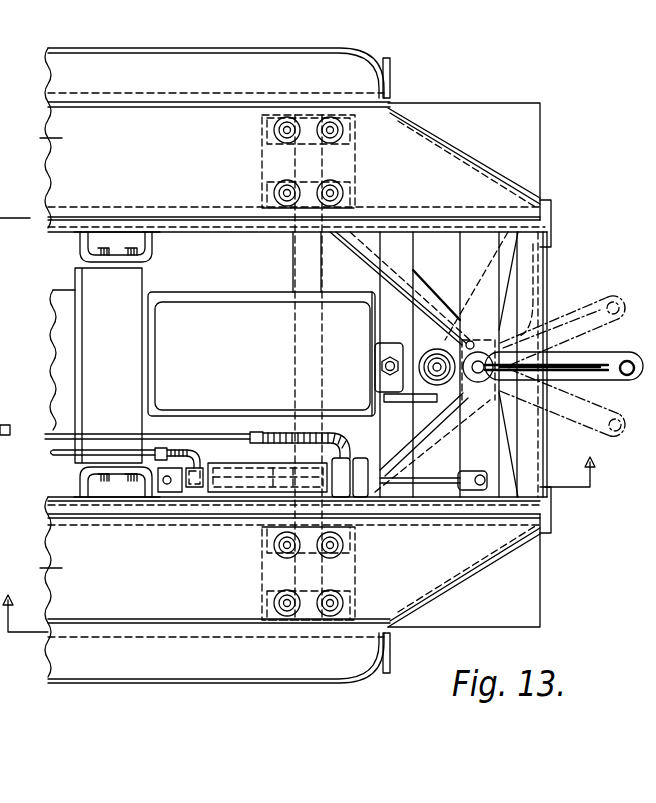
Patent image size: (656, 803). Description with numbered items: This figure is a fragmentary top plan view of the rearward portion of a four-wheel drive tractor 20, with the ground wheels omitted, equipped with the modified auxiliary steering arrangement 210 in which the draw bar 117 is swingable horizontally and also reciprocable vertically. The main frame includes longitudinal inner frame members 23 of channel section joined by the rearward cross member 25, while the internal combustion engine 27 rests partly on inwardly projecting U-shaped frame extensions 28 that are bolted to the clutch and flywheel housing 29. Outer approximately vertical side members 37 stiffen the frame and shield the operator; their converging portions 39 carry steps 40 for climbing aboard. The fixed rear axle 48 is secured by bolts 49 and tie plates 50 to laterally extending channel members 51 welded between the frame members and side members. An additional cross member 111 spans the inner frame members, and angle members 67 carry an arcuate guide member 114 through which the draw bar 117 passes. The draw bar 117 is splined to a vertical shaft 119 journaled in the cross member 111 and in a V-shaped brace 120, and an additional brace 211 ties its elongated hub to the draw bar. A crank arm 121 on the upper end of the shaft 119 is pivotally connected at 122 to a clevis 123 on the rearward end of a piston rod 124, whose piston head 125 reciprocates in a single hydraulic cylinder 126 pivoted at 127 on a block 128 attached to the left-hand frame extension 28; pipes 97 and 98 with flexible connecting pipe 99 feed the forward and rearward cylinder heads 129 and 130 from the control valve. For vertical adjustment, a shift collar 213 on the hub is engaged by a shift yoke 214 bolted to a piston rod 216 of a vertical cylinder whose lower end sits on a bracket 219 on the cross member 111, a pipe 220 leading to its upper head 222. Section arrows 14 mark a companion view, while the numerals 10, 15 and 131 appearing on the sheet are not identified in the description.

The vehicle frame 10 is at (15, 213).
The section line 14 is at (305, 536).
The frame rail 15 is at (42, 352).
The tractor 20 is at (559, 179).
The longitudinal inner frame members 23 is at (193, 237).
The rearward cross member 25 is at (534, 267).
The internal combustion engine 27 is at (244, 301).
The frame extensions 28 is at (151, 256).
The clutch and flywheel housing 29 is at (93, 347).
The side members 37 is at (195, 65).
The converging portions 39 is at (465, 156).
The steps 40 is at (529, 129).
The rear axle 48 is at (300, 255).
The bolts 49 is at (345, 133).
The tie plates 50 is at (314, 187).
The channel members 51 is at (355, 161).
The angle members 67 is at (556, 225).
The pipe 97 is at (112, 437).
The pipe 98 is at (50, 455).
The flexible connecting pipe 99 is at (281, 435).
The cross member 111 is at (478, 260).
The arcuate guide member 114 is at (388, 280).
The draw bar 117 is at (618, 352).
The vertical shaft 119 is at (468, 351).
The V-shaped brace 120 is at (574, 296).
The crank arm 121 is at (468, 463).
The pivotal connection 122 is at (482, 492).
The clevis 123 is at (467, 492).
The piston rod 124 is at (428, 492).
The piston head 125 is at (261, 460).
The hydraulic cylinder 126 is at (230, 486).
The pivotal mounting 127 is at (166, 494).
The block 128 is at (176, 495).
The forward cylinder head 129 is at (198, 490).
The rearward cylinder head 130 is at (360, 458).
The pin hole 131 is at (629, 379).
The modified auxiliary steering arrangement 210 is at (580, 297).
The additional brace 211 is at (575, 365).
The shift collar 213 is at (545, 339).
The shift yoke 214 is at (444, 401).
The piston rod 216 is at (377, 385).
The bracket 219 is at (462, 338).
The pipe 220 is at (402, 402).
The upper head 222 is at (452, 352).